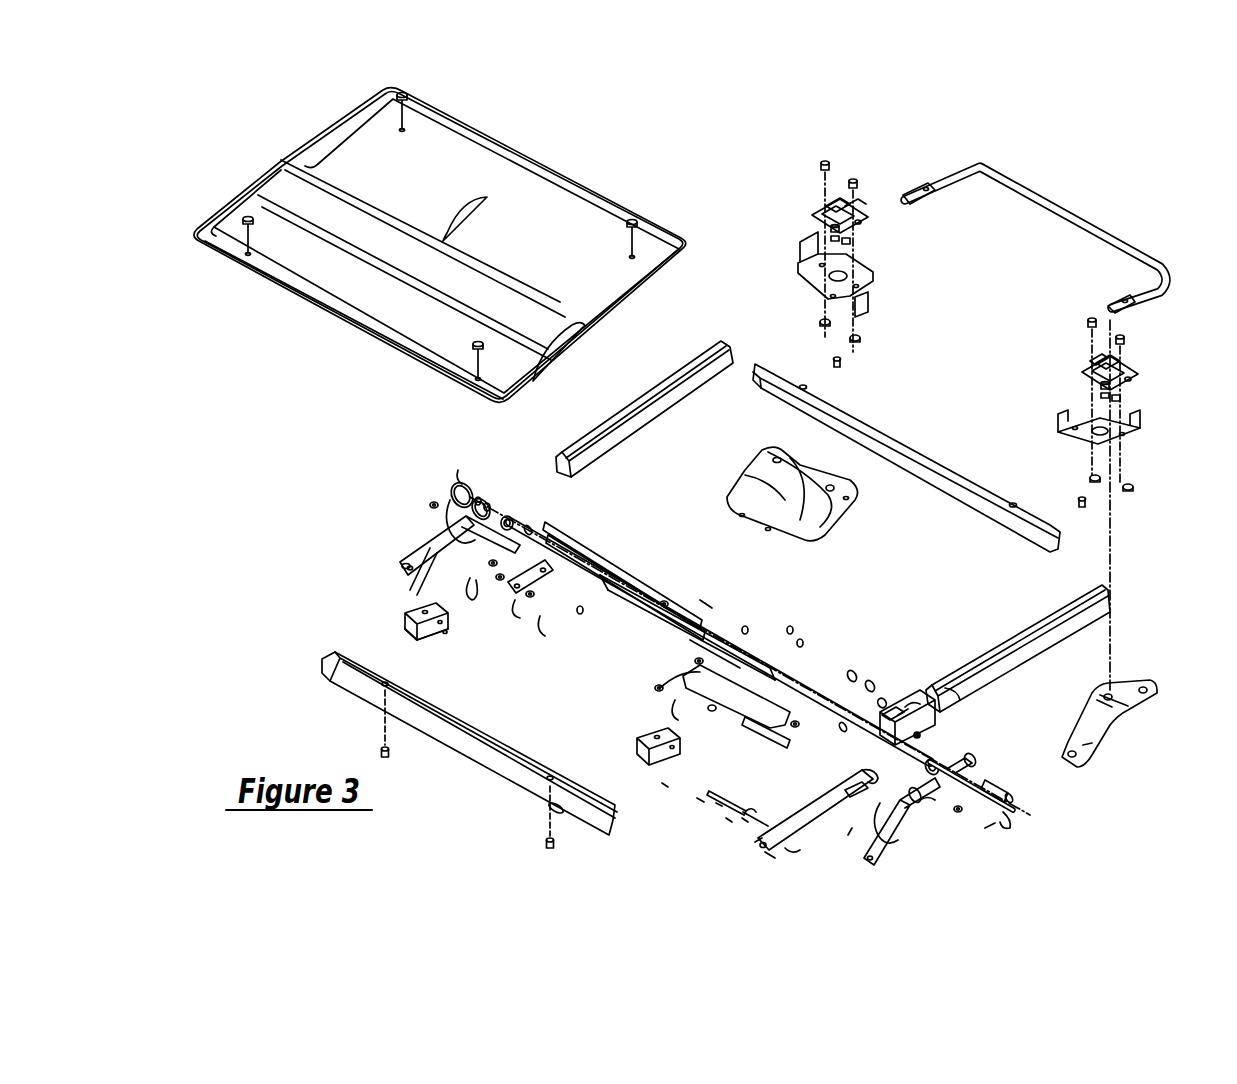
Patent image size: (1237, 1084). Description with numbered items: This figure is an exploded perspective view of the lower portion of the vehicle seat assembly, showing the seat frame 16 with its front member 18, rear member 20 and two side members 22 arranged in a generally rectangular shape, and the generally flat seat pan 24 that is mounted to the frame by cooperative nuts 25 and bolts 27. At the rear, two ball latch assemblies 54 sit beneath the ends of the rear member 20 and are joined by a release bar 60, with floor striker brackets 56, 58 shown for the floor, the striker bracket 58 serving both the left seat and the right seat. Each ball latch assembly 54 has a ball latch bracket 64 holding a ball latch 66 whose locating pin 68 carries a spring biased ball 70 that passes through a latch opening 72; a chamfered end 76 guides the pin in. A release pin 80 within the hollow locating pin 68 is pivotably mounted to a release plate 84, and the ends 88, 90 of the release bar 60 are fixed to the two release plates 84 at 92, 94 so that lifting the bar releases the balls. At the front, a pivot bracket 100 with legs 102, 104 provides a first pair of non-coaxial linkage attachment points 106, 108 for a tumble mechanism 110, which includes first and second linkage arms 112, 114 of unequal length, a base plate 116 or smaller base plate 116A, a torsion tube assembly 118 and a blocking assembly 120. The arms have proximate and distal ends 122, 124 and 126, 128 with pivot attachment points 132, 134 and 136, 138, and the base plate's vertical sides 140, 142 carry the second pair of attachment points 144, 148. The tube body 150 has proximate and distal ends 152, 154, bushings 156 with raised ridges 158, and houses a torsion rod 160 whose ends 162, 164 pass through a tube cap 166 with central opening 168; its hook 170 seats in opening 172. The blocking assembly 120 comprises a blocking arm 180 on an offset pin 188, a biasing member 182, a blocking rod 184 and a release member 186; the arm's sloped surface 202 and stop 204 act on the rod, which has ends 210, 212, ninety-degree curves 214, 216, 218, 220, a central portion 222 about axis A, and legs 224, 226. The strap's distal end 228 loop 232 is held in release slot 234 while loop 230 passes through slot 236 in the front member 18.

The seat frame 16 is at (352, 574).
The front member 18 is at (513, 746).
The rear member 20 is at (955, 458).
The side members 22 is at (659, 416).
The seat pan 24 is at (300, 302).
The nuts 25 is at (410, 95).
The bolts 27 is at (853, 178).
The ball latch assembly 54 is at (870, 210).
The floor striker bracket 56 is at (1116, 686).
The floor striker bracket 58 is at (808, 536).
The release bar 60 is at (1064, 196).
The ball latch bracket 64 is at (872, 274).
The ball latch 66 is at (831, 228).
The locating pin 68 is at (831, 240).
The ball 70 is at (855, 236).
The latch opening 72 is at (832, 485).
The chamfered end 76 is at (849, 252).
The release pin 80 is at (830, 201).
The release plate 84 is at (823, 214).
The end of release bar 88 is at (924, 184).
The end of release bar 90 is at (1124, 305).
The mounting location 92 is at (859, 205).
The mounting location 94 is at (1093, 357).
The pivot bracket 100 is at (415, 645).
The leg 102 is at (404, 626).
The leg 104 is at (440, 652).
The linkage attachment point 106 is at (446, 640).
The linkage attachment point 108 is at (410, 609).
The tumble mechanism 110 is at (422, 527).
The first linkage arm 112 is at (560, 535).
The second linkage arm 114 is at (728, 628).
The base plate 116 is at (985, 774).
The smaller base plate 116A is at (455, 488).
The torsion tube assembly 118 is at (752, 592).
The blocking assembly 120 is at (947, 640).
The proximate end 122 is at (510, 590).
The distal end 124 is at (534, 526).
The proximate end 126 is at (546, 634).
The distal end 128 is at (583, 613).
The pivot attachment point 132 is at (745, 740).
The pivot attachment point 134 is at (565, 560).
The pivot attachment point 136 is at (468, 584).
The pivot attachment point 138 is at (622, 584).
The vertical side 140 is at (450, 500).
The vertical side 142 is at (490, 507).
The linkage attachment point 144 is at (462, 482).
The linkage attachment point 148 is at (411, 549).
The tube body 150 is at (710, 604).
The proximate end 152 is at (791, 626).
The distal end 154 is at (514, 523).
The bushing 156 is at (478, 498).
The raised ridge 158 is at (487, 504).
The torsion rod 160 is at (990, 834).
The proximate end 162 is at (1020, 808).
The distal end 164 is at (801, 639).
The tube cap 166 is at (880, 700).
The central opening 168 is at (904, 705).
The hook 170 is at (1010, 826).
The opening 172 is at (975, 762).
The blocking arm 180 is at (940, 713).
The biasing member 182 is at (922, 736).
The blocking rod 184 is at (720, 806).
The release member 186 is at (760, 848).
The offset pin 188 is at (1010, 795).
The sloped surface 202 is at (906, 690).
The stop 204 is at (838, 790).
The proximate end 210 is at (768, 814).
The distal end 212 is at (665, 790).
The ninety-degree curve 214 is at (700, 800).
The ninety-degree curve 216 is at (732, 794).
The ninety-degree curve 218 is at (745, 822).
The ninety-degree curve 220 is at (752, 808).
The central portion 222 is at (728, 821).
The leg 224 is at (926, 802).
The leg 226 is at (792, 852).
The distal end 228 is at (830, 844).
The loop 230 is at (771, 856).
The loop 232 is at (860, 792).
The release slot 234 is at (955, 690).
The slot 236 is at (560, 815).
The center axis A is at (712, 795).